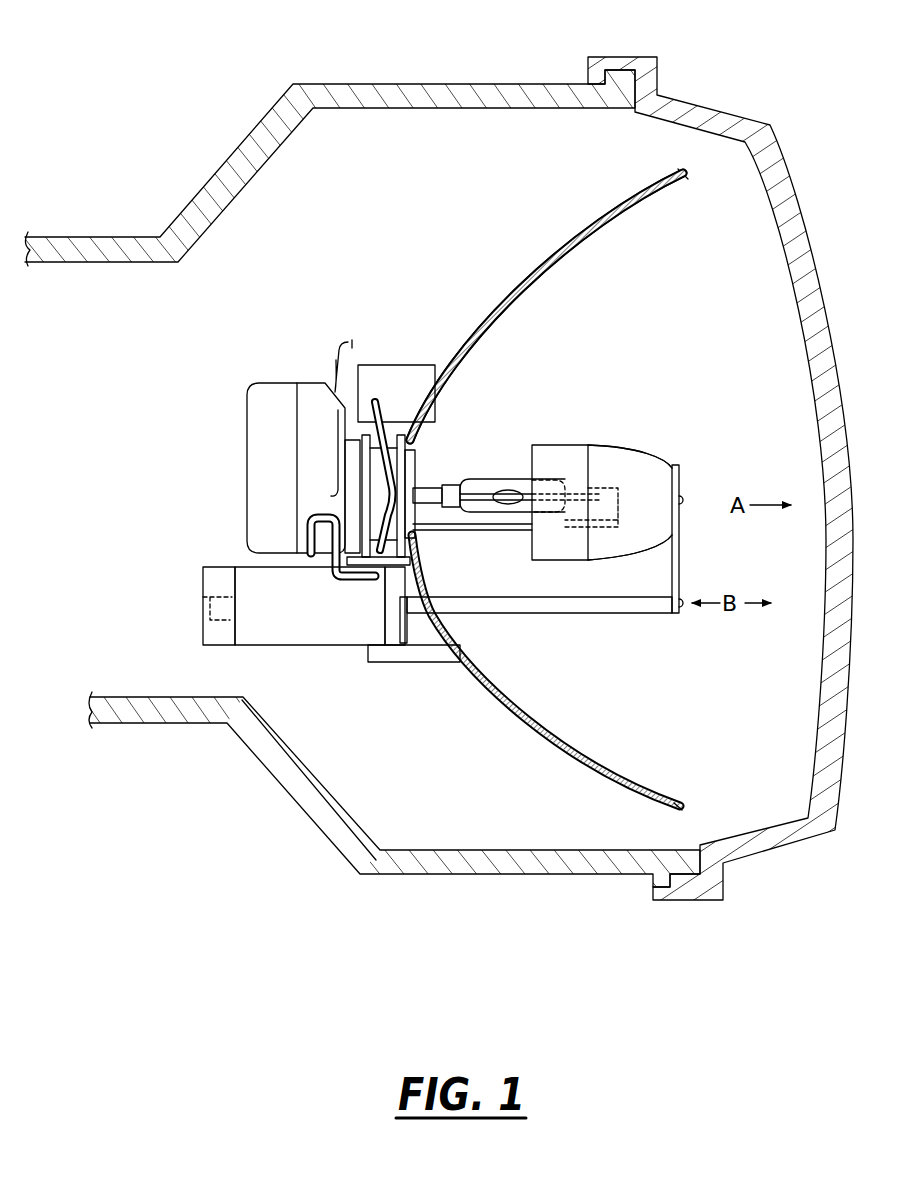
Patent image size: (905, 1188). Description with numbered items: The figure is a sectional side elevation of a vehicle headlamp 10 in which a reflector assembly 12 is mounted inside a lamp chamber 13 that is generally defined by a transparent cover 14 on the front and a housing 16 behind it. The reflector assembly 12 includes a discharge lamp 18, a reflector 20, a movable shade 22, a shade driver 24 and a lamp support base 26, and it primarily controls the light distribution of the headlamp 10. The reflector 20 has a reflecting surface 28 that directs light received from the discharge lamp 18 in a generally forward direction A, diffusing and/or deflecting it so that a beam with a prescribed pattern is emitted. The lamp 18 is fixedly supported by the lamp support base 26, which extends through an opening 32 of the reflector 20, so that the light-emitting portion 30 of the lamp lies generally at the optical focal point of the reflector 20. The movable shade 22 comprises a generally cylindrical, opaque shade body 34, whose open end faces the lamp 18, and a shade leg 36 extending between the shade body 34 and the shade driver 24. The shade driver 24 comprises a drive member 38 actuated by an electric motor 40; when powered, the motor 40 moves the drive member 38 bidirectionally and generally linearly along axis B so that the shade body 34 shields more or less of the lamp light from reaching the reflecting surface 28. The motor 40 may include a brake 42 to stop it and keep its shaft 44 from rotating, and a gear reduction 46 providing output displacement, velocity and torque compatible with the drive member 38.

The vehicle headlamp 10 is at (187, 68).
The reflector assembly 12 is at (458, 299).
The lamp chamber 13 is at (390, 183).
The transparent cover 14 is at (783, 152).
The housing 16 is at (409, 84).
The discharge lamp 18 is at (477, 477).
The reflector 20 is at (588, 227).
The movable shade 22 is at (679, 449).
The shade driver 24 is at (354, 653).
The lamp support base 26 is at (247, 435).
The reflecting surface 28 is at (570, 250).
The light-emitting portion 30 is at (505, 490).
The opening 32 is at (421, 470).
The shade body 34 is at (582, 445).
The shade leg 36 is at (681, 562).
The drive member 38 is at (590, 613).
The electric motor 40 is at (272, 635).
The brake 42 is at (203, 630).
The shaft 44 is at (203, 597).
The gear reduction 46 is at (395, 635).